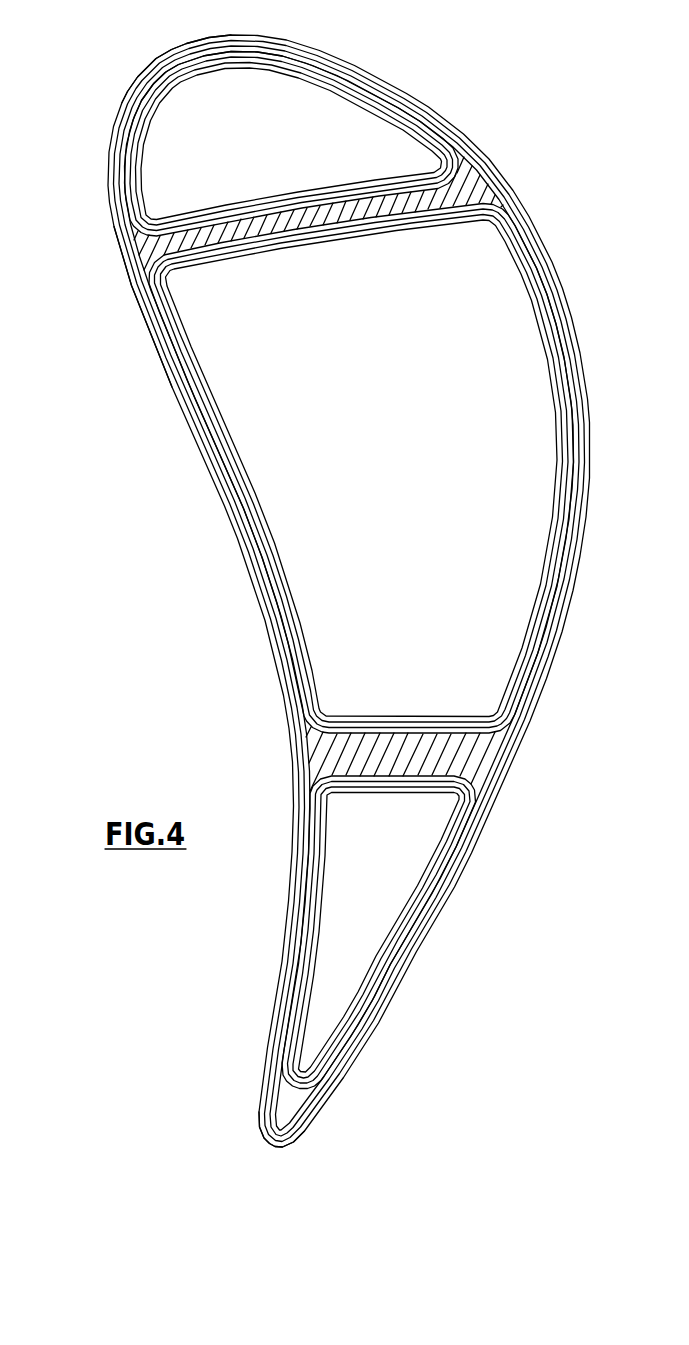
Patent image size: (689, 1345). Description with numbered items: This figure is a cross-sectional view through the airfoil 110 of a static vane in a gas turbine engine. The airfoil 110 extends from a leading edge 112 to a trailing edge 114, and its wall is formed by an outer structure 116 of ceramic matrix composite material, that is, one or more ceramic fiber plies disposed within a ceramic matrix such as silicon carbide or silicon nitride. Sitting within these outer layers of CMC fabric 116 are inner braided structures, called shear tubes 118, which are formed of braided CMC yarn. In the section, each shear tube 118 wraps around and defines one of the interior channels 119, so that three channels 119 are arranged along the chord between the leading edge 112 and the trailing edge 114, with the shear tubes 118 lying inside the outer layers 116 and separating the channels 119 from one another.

The airfoil 110 is at (183, 647).
The leading edge 112 is at (178, 51).
The trailing edge 114 is at (266, 1138).
The outer structure 116 is at (126, 267).
The shear tube 118 is at (172, 214).
The channels 119 is at (278, 127).